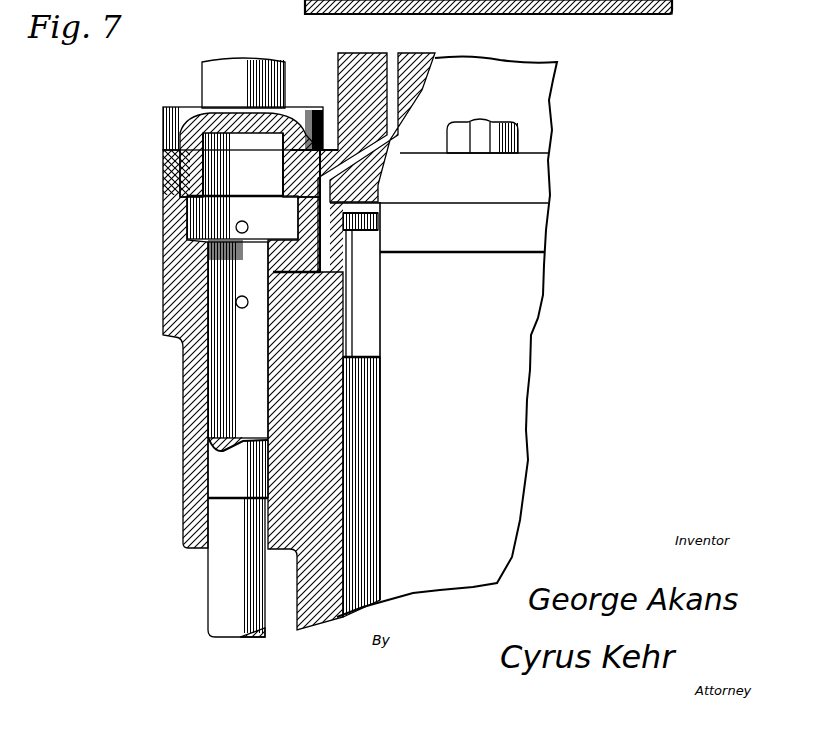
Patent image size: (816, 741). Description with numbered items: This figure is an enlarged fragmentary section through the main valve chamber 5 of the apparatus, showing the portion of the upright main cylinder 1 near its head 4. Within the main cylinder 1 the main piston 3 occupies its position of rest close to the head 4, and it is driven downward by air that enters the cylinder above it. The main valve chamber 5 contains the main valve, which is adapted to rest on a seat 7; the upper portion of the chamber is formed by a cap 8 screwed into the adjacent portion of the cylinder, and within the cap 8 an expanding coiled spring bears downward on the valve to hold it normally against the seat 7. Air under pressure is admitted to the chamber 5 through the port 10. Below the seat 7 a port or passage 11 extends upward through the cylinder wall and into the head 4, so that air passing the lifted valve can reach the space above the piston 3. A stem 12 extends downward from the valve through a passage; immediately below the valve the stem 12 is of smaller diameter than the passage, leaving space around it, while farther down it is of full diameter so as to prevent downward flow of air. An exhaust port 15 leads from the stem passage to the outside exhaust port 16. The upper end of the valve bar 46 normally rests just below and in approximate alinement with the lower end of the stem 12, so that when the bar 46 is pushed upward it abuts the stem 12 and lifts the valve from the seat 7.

The main cylinder 1 is at (522, 279).
The main piston 3 is at (365, 335).
The head 4 is at (350, 71).
The main valve chamber 5 is at (187, 164).
The seat 7 is at (205, 245).
The cap 8 is at (177, 122).
The port 10 is at (237, 227).
The port or passage 11 is at (390, 106).
The stem 12 is at (225, 473).
The exhaust port 15 is at (235, 302).
The outside exhaust port 16 is at (366, 14).
The valve bar 46 is at (222, 578).